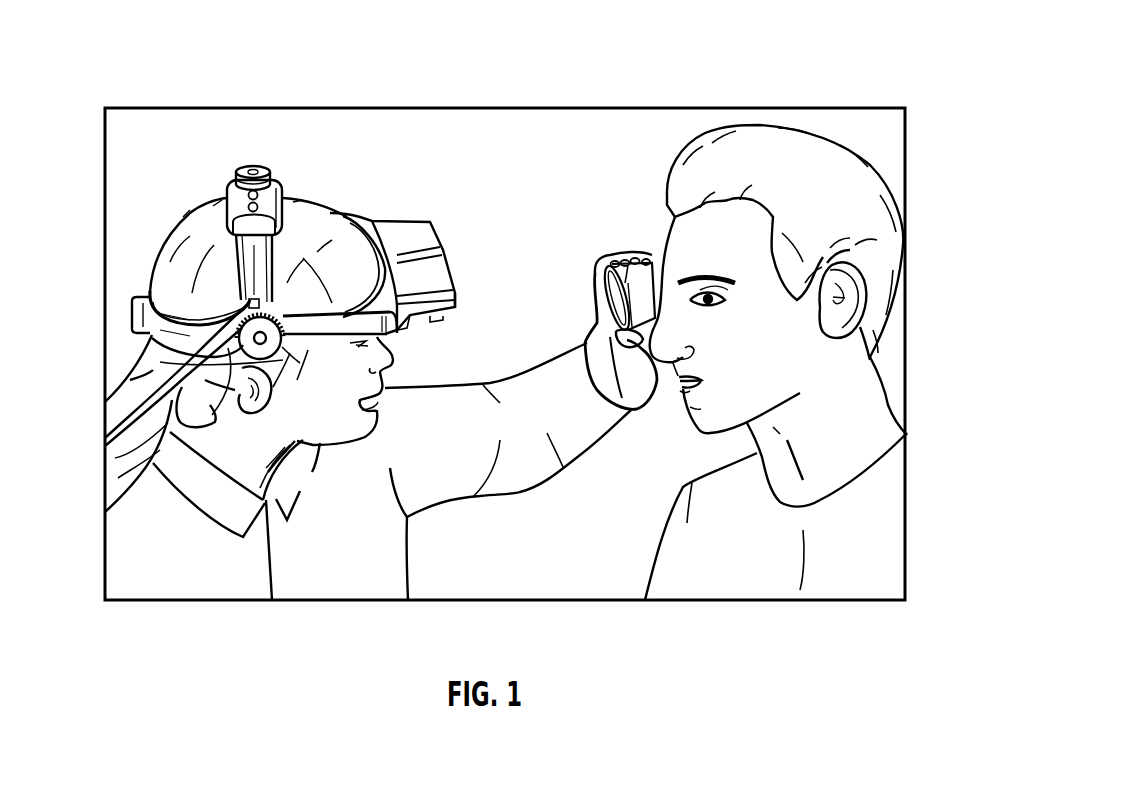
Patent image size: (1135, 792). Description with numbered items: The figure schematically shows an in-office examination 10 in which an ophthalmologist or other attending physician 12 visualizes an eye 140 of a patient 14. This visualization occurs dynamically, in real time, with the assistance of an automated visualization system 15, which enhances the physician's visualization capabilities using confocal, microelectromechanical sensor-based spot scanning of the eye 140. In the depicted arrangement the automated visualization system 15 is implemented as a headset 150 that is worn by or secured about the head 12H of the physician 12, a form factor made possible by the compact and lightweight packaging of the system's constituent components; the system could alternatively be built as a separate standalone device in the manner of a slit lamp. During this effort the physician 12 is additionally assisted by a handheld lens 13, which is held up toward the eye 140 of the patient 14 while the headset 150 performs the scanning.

The in-office examination 10 is at (861, 64).
The physician 12 is at (297, 297).
The head 12H is at (191, 186).
The headset 150 is at (370, 205).
The automated visualization system 15 is at (472, 277).
The handheld lens 13 is at (608, 258).
The eye 140 is at (648, 251).
The patient 14 is at (888, 364).